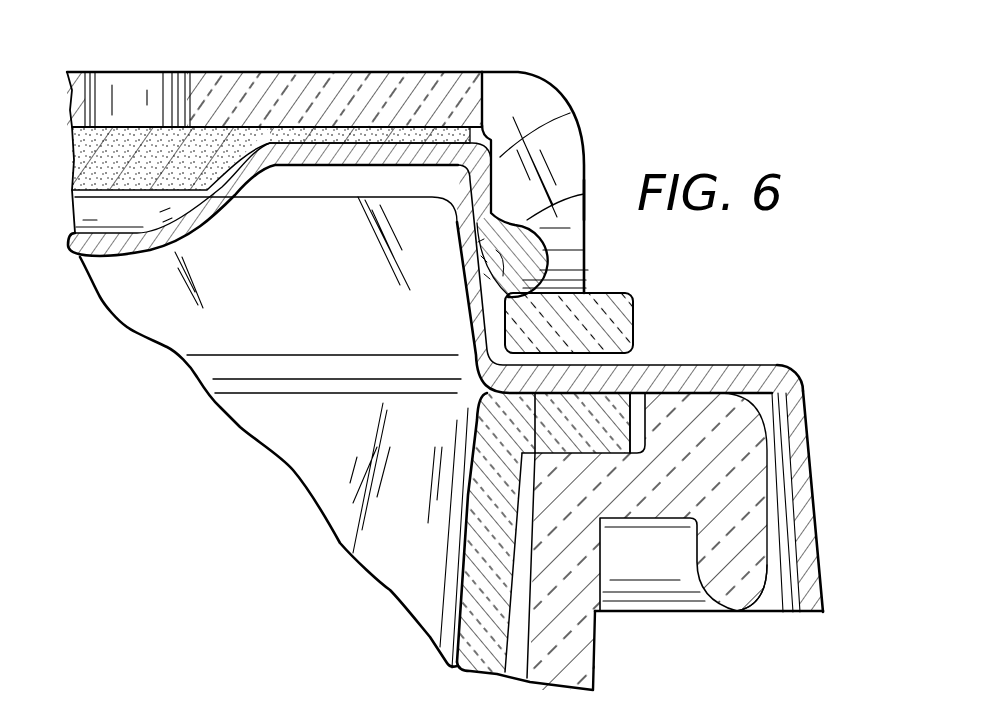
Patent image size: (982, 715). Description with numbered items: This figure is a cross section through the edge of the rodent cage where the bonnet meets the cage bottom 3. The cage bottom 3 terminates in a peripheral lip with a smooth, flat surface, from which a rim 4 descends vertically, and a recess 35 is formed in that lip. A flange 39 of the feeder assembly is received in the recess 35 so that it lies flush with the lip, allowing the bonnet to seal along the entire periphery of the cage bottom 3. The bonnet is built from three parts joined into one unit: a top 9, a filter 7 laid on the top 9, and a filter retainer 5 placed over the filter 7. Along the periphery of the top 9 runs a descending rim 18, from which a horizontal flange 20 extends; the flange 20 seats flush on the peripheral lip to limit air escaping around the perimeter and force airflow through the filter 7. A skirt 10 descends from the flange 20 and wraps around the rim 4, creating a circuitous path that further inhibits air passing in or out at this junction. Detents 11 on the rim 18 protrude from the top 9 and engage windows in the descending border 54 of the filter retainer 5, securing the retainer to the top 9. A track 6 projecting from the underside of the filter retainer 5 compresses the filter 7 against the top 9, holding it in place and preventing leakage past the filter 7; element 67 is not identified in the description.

The cage bottom 3 is at (596, 637).
The rim 4 is at (738, 580).
The filter retainer 5 is at (334, 70).
The track 6 is at (398, 137).
The filter 7 is at (97, 157).
The top 9 is at (132, 240).
The skirt 10 is at (820, 502).
The detents 11 is at (587, 194).
The descending rim 18 is at (571, 113).
The horizontal flange 20 is at (776, 366).
The recess 35 is at (683, 367).
The flange 39 is at (630, 388).
The descending border 54 is at (587, 249).
The spring element 67 is at (477, 597).